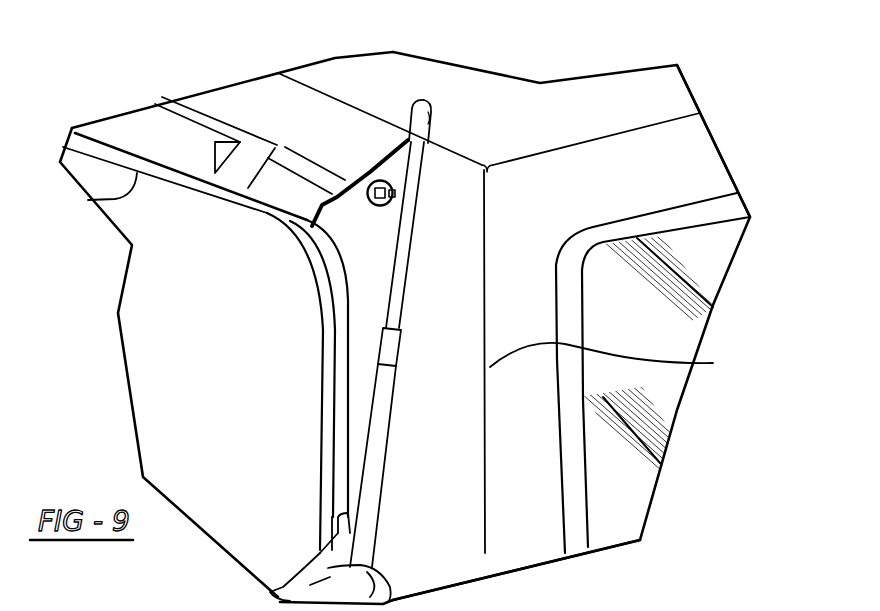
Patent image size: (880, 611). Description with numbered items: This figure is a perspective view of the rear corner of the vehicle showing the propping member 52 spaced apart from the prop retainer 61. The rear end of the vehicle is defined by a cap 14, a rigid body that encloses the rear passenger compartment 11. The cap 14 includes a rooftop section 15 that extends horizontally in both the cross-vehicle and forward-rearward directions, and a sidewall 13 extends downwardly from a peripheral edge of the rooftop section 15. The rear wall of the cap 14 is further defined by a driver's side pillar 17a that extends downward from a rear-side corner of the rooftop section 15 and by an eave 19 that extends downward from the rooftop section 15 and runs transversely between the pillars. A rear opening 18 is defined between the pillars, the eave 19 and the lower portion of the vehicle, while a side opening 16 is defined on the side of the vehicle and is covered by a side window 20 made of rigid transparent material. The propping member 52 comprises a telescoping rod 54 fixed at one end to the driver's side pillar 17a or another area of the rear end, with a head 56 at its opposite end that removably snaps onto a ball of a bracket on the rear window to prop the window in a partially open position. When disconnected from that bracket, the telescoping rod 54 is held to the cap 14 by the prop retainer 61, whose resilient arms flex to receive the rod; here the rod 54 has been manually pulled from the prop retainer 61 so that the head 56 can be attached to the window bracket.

The passenger compartment 11 is at (598, 188).
The sidewall 13 is at (537, 507).
The cap 14 is at (652, 100).
The rooftop section 15 is at (528, 115).
The side opening 16 is at (703, 223).
The driver's side pillar 17a is at (621, 359).
The rear opening 18 is at (88, 200).
The eave 19 is at (233, 107).
The side window 20 is at (650, 393).
The propping member 52 is at (392, 472).
The telescoping rod 54 is at (375, 433).
The head 56 is at (430, 107).
The prop retainer 61 is at (368, 200).